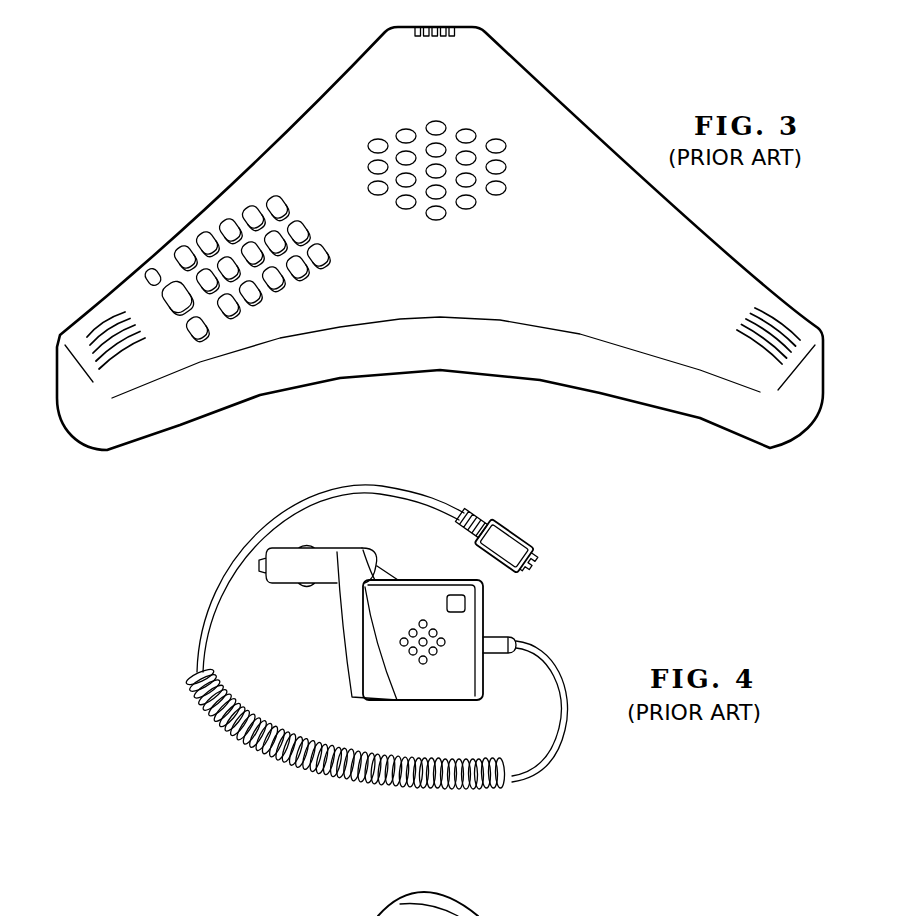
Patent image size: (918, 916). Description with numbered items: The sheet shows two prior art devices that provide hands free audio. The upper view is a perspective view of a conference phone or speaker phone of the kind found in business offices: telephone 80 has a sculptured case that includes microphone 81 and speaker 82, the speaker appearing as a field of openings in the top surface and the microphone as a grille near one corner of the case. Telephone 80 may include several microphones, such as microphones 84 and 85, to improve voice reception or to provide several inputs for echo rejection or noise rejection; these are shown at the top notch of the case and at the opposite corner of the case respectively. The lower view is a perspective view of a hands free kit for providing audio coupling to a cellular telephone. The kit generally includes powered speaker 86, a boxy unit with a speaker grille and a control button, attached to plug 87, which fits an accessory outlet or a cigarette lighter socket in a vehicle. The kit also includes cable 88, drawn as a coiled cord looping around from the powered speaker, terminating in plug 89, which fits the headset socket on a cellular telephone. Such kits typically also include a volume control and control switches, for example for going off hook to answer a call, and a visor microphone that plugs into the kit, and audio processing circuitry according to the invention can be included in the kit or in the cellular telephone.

In FIG. 3, the telephone 80 is at (334, 90).
In FIG. 3, the microphone 81 is at (105, 324).
In FIG. 3, the speaker 82 is at (436, 148).
In FIG. 3, the microphone 84 is at (447, 40).
In FIG. 3, the microphone 85 is at (775, 320).
In FIG. 4, the powered speaker 86 is at (437, 682).
In FIG. 4, the plug 87 is at (286, 584).
In FIG. 4, the cable 88 is at (222, 582).
In FIG. 4, the plug 89 is at (507, 548).